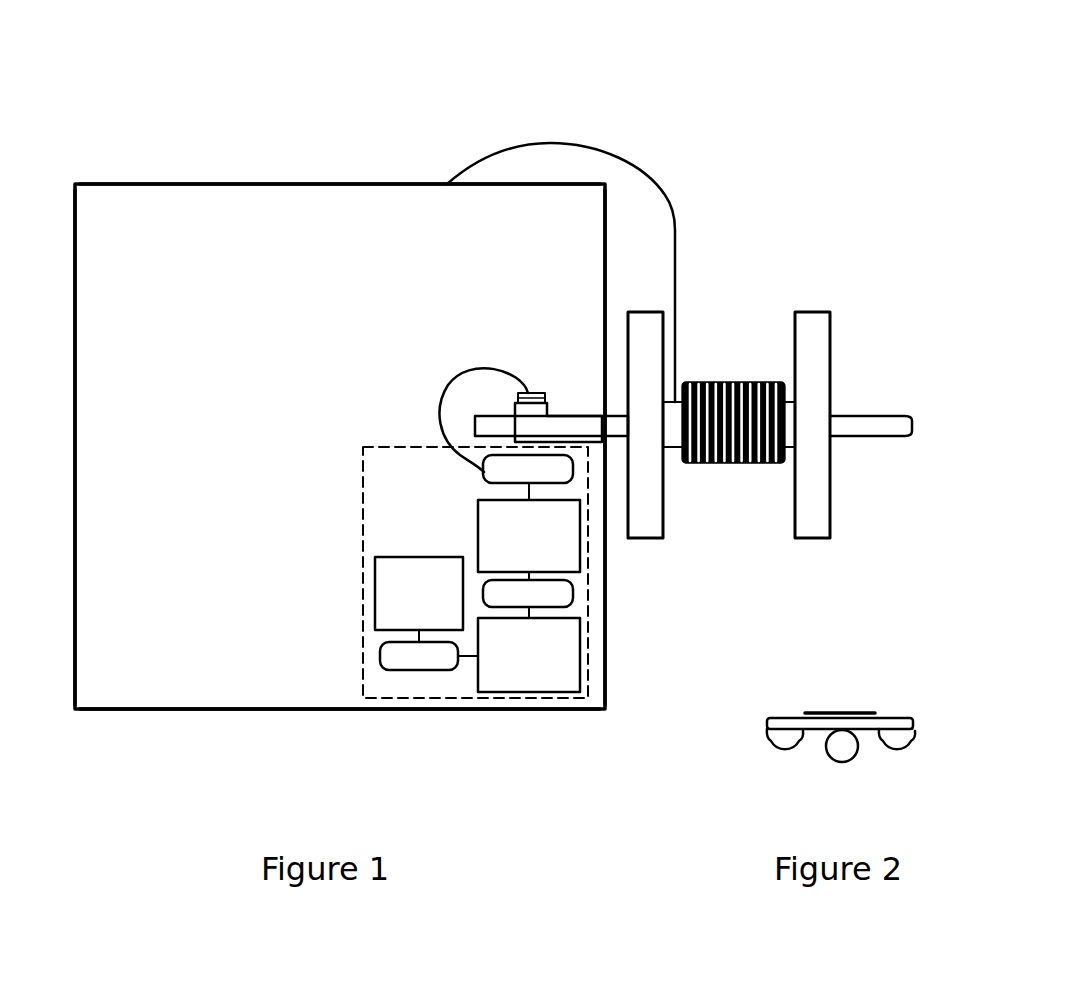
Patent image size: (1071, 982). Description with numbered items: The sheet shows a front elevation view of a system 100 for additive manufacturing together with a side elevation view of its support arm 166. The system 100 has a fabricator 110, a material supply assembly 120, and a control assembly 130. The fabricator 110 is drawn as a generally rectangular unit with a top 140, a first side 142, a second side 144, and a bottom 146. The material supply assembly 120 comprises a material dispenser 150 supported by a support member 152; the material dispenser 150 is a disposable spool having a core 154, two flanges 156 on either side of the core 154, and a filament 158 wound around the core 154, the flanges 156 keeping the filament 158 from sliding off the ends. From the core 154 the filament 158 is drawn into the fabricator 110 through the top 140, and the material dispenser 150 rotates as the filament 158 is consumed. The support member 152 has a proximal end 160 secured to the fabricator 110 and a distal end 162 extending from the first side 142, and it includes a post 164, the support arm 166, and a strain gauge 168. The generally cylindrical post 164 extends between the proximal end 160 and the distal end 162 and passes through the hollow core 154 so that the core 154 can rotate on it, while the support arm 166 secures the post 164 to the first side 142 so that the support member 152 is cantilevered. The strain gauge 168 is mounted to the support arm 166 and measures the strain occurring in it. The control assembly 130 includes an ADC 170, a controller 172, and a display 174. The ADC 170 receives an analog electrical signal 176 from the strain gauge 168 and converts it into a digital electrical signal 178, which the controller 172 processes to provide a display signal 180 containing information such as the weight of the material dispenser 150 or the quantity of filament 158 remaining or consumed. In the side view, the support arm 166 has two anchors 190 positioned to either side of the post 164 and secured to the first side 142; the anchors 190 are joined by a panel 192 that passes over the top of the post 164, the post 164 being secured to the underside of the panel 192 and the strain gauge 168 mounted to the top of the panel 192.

In FIG. 1, the system 100 is at (664, 52).
In FIG. 1, the fabricator 110 is at (281, 121).
In FIG. 1, the material supply assembly 120 is at (766, 252).
In FIG. 1, the control assembly 130 is at (508, 698).
In FIG. 1, the top 140 is at (333, 184).
In FIG. 1, the first side 142 is at (605, 590).
In FIG. 1, the second side 144 is at (75, 550).
In FIG. 1, the bottom 146 is at (293, 709).
In FIG. 1, the material dispenser 150 is at (702, 454).
In FIG. 1, the support member 152 is at (864, 385).
In FIG. 1, the core 154 is at (672, 430).
In FIG. 1, the flanges 156 is at (812, 358).
In FIG. 1, the filament 158 is at (667, 200).
In FIG. 1, the proximal end 160 is at (498, 394).
In FIG. 1, the distal end 162 is at (864, 522).
In FIG. 1, the post 164 is at (850, 428).
In FIG. 2, the post 164 is at (847, 743).
In FIG. 1, the support arm 166 is at (562, 427).
In FIG. 2, the support arm 166 is at (884, 651).
In FIG. 1, the strain gauge 168 is at (543, 393).
In FIG. 2, the strain gauge 168 is at (843, 712).
In FIG. 1, the ADC 170 is at (529, 540).
In FIG. 1, the controller 172 is at (529, 655).
In FIG. 1, the display 174 is at (419, 599).
In FIG. 1, the analog electrical signal 176 is at (483, 472).
In FIG. 1, the digital electrical signal 178 is at (483, 595).
In FIG. 1, the display signal 180 is at (380, 653).
In FIG. 2, the anchors 190 is at (783, 745).
In FIG. 2, the panel 192 is at (890, 717).